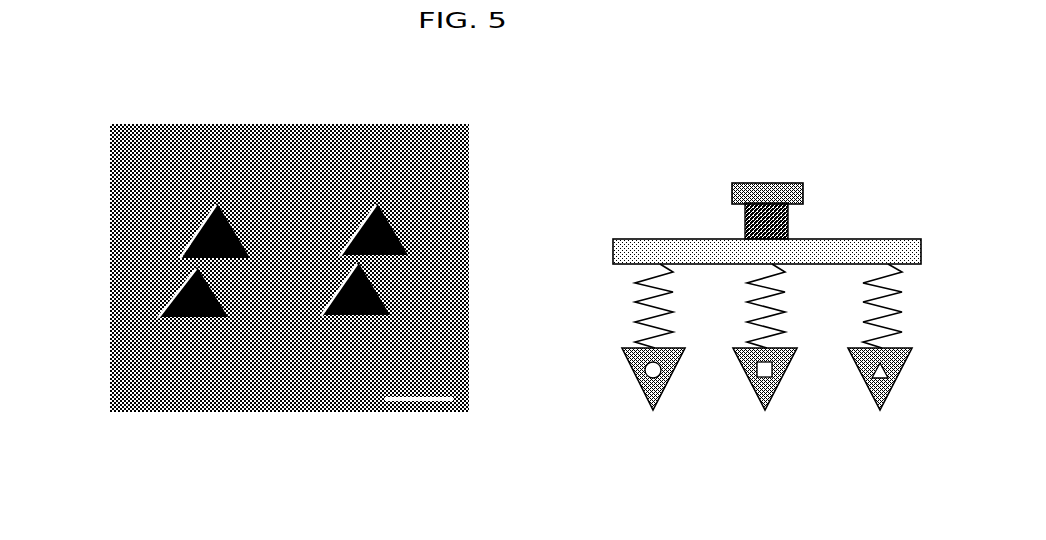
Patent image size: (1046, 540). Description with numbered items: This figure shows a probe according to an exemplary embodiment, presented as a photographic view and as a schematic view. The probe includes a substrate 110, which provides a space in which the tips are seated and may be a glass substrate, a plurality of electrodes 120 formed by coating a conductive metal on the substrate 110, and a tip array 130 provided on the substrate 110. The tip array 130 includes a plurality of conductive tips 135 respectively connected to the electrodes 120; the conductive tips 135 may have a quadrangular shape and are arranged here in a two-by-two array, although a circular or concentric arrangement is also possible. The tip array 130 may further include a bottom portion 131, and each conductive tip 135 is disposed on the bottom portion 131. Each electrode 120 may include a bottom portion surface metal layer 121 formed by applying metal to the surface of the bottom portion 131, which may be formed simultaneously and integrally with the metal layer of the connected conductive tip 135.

The substrate 110 is at (143, 178).
The bottom portion 131 is at (248, 268).
The electrode 120 is at (395, 300).
The bottom portion surface metal layer 121 is at (265, 292).
The tip array 130 is at (86, 297).
The conductive tip 135 is at (255, 245).